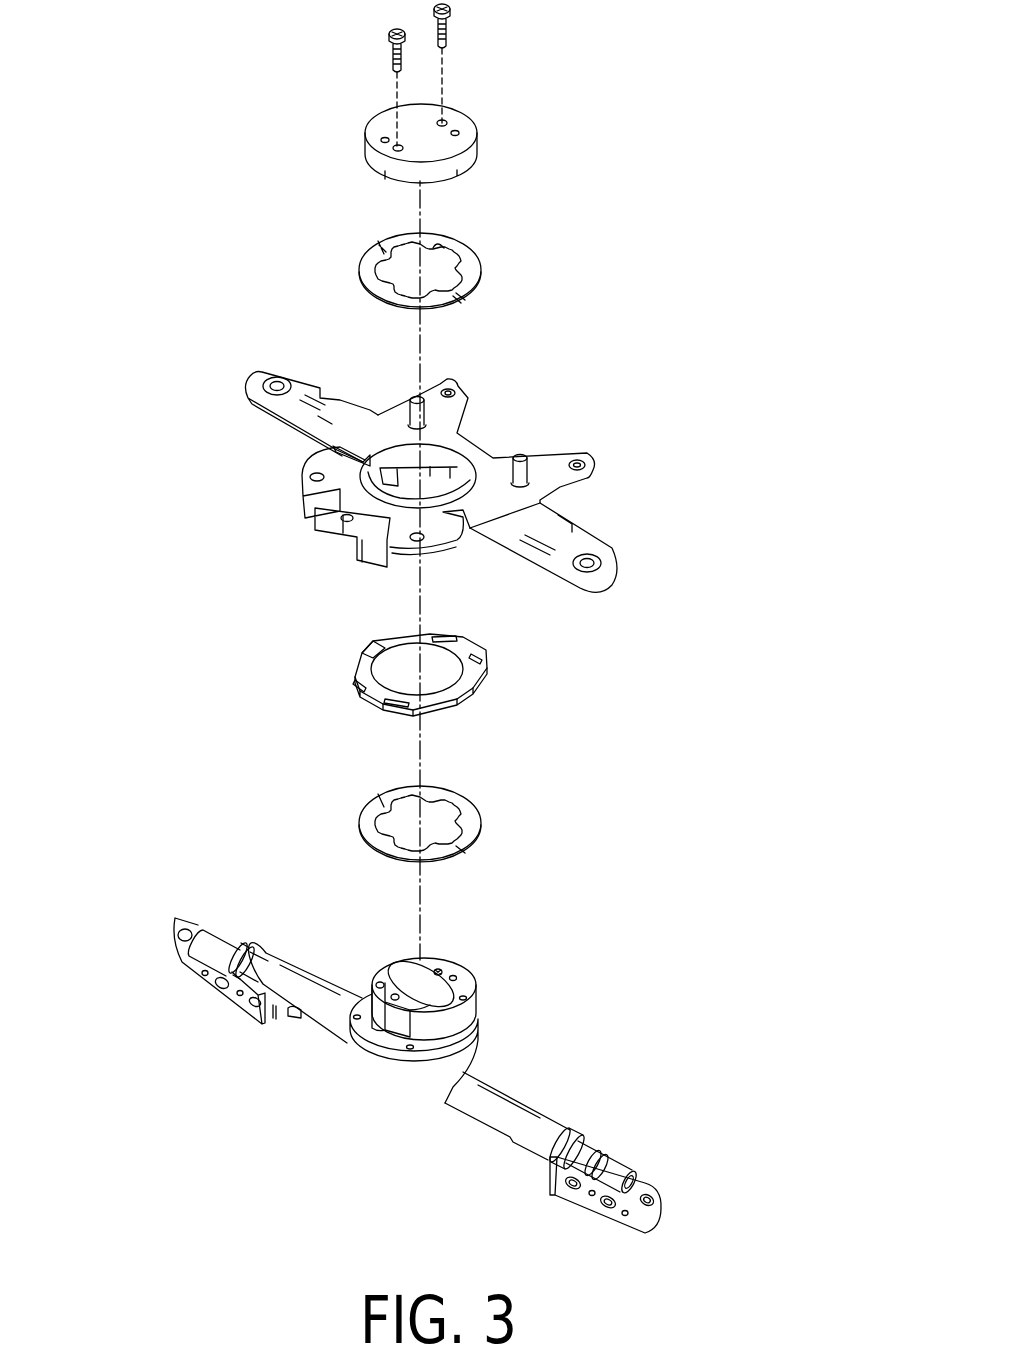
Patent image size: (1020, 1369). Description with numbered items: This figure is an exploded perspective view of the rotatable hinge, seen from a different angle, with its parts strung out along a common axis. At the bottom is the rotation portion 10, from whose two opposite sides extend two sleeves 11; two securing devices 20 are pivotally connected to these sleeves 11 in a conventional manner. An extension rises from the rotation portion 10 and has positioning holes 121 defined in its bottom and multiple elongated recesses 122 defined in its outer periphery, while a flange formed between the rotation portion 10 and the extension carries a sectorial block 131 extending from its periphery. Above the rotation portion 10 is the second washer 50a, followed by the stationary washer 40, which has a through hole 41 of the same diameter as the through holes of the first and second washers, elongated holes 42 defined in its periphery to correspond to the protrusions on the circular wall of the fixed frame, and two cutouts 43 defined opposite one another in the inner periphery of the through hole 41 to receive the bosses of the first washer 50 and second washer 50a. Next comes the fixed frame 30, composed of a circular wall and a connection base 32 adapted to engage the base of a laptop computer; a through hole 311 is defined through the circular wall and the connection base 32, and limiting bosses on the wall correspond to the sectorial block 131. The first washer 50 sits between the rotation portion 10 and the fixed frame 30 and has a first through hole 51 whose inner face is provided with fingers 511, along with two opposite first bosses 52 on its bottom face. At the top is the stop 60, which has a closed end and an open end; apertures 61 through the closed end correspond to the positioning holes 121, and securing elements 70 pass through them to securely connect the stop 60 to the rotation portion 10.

The rotation portion 10 is at (413, 1060).
The sleeves 11 is at (498, 1087).
The positioning holes 121 is at (443, 969).
The elongated recesses 122 is at (373, 995).
The sectorial block 131 is at (385, 1052).
The securing devices 20 is at (222, 1029).
The fixed frame 30 is at (459, 482).
The through hole 311 is at (338, 446).
The connection base 32 is at (470, 445).
The stationary washer 40 is at (430, 661).
The through hole 41 is at (437, 660).
The elongated holes 42 is at (480, 653).
The cutouts 43 is at (378, 648).
The first washer 50 is at (465, 266).
The second washer 50a is at (470, 813).
The first through hole 51 is at (455, 279).
The fingers 511 is at (438, 246).
The first bosses 52 is at (462, 300).
The stop 60 is at (477, 150).
The apertures 61 is at (445, 121).
The securing elements 70 is at (449, 23).